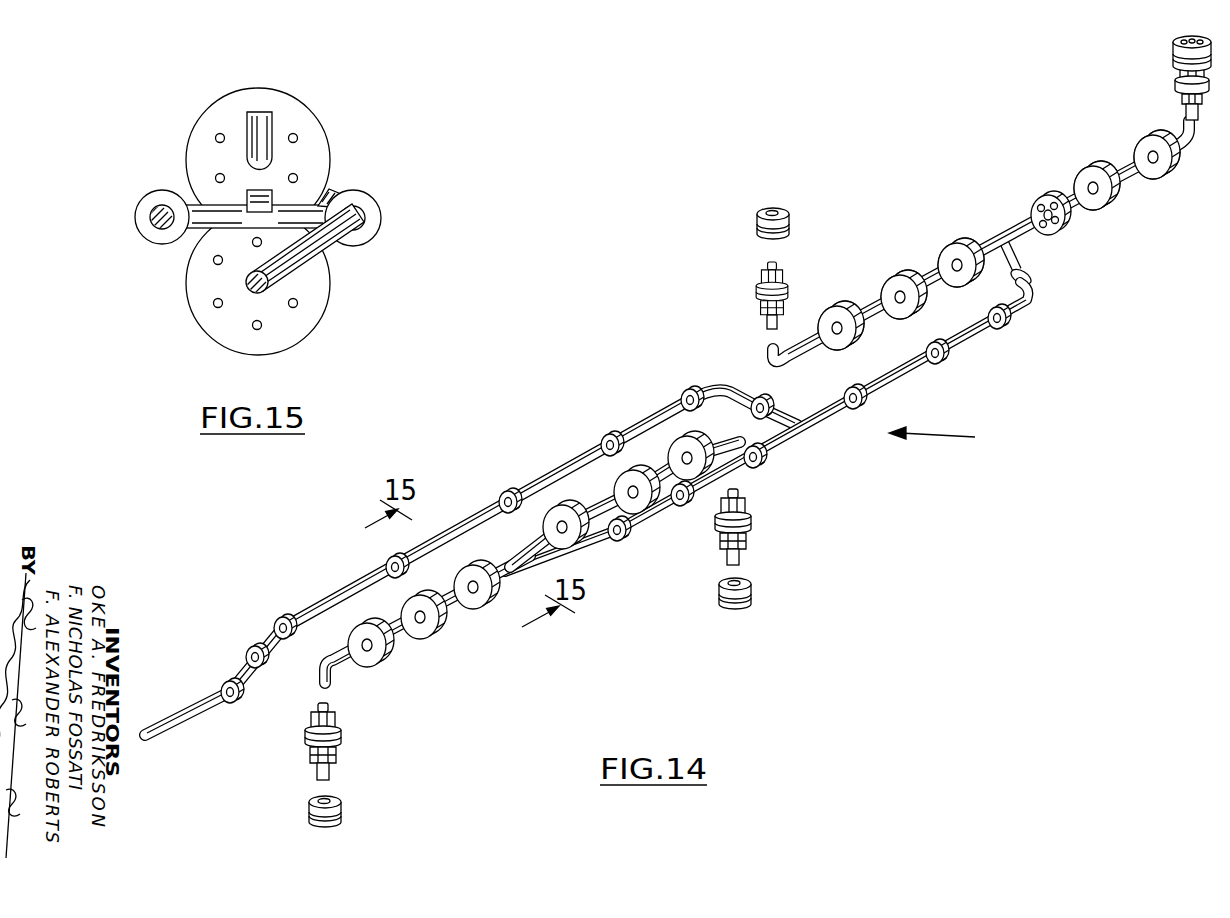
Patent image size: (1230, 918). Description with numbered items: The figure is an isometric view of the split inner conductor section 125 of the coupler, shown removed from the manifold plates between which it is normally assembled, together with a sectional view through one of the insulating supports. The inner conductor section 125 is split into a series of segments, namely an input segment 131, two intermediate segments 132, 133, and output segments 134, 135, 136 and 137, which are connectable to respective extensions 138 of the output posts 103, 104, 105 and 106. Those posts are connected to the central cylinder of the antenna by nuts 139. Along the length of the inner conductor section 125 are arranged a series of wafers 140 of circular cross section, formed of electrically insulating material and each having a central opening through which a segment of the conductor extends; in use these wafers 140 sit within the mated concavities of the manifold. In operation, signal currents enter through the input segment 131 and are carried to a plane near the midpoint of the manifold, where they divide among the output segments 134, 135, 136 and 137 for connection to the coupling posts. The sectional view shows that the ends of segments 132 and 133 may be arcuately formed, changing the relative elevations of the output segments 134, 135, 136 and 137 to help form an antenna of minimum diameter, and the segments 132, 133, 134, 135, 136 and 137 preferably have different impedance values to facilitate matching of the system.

In FIG. 14, the output coupler 103 is at (343, 735).
In FIG. 14, the output coupler 104 is at (752, 525).
In FIG. 14, the output coupler 105 is at (755, 297).
In FIG. 14, the output coupler 106 is at (1175, 85).
In FIG. 14, the inner conductor section 125 is at (951, 439).
In FIG. 14, the input segment 131 is at (178, 710).
In FIG. 15, the input segment 131 is at (177, 252).
In FIG. 14, the segment 132 is at (740, 470).
In FIG. 15, the segment 132 is at (292, 272).
In FIG. 14, the segment 133 is at (970, 337).
In FIG. 15, the segment 133 is at (333, 193).
In FIG. 14, the output segment 134 is at (397, 637).
In FIG. 15, the output segment 134 is at (248, 280).
In FIG. 14, the output segment 135 is at (592, 505).
In FIG. 14, the output segment 136 is at (867, 305).
In FIG. 15, the output segment 136 is at (273, 125).
In FIG. 14, the output segment 137 is at (1127, 178).
In FIG. 14, the extension 138 is at (332, 771).
In FIG. 14, the nut 139 is at (343, 815).
In FIG. 14, the wafer 140 is at (477, 610).
In FIG. 15, the wafer 140 is at (330, 268).